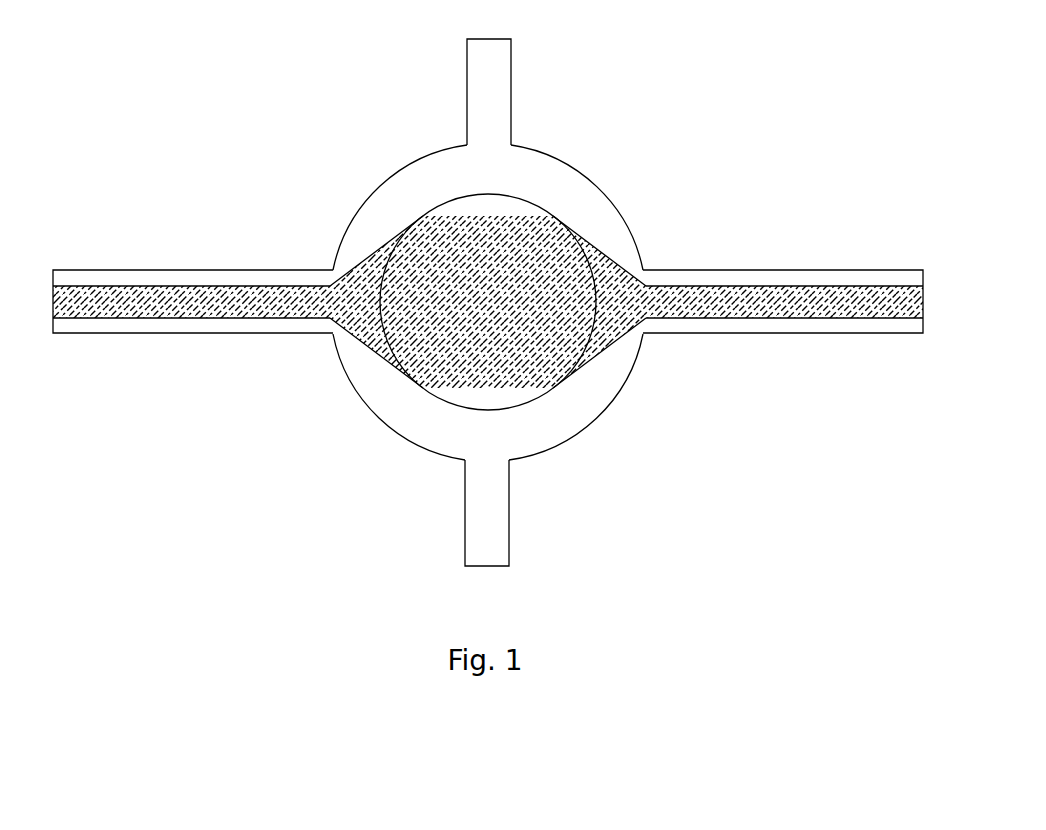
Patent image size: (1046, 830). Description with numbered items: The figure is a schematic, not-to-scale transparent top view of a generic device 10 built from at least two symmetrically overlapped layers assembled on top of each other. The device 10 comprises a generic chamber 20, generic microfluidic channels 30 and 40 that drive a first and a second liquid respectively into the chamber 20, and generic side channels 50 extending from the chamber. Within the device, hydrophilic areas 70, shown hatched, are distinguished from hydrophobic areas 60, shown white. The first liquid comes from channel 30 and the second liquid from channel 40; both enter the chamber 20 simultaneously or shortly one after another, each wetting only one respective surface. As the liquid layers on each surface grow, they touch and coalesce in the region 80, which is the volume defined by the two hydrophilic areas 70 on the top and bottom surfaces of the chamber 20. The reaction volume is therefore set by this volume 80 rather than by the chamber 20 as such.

The generic device 10 is at (348, 128).
The generic chamber 20 is at (607, 190).
The generic microfluidic channel 30 is at (197, 270).
The generic microfluidic channel 40 is at (725, 270).
The generic side channels 50 is at (512, 95).
The hydrophobic areas 60 is at (385, 385).
The hydrophilic areas 70 is at (162, 300).
The region 80 is at (538, 398).